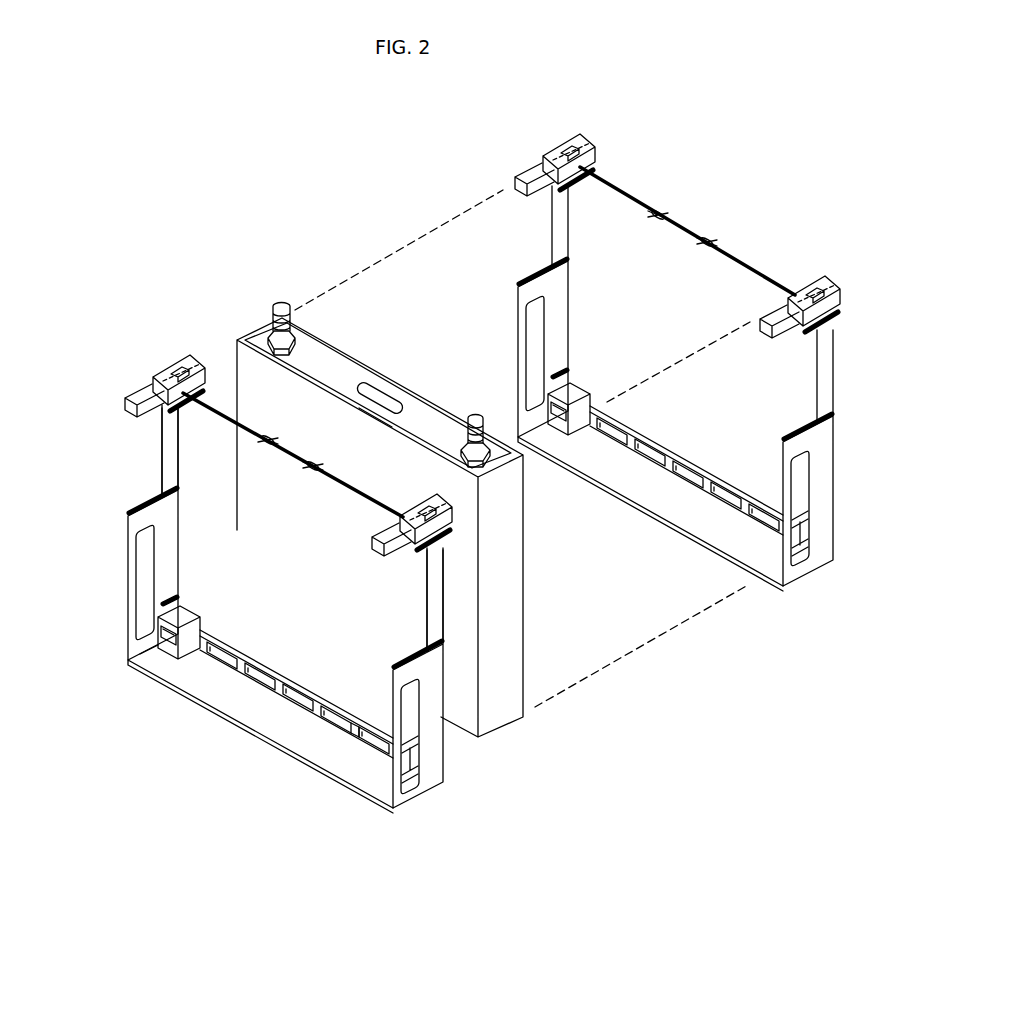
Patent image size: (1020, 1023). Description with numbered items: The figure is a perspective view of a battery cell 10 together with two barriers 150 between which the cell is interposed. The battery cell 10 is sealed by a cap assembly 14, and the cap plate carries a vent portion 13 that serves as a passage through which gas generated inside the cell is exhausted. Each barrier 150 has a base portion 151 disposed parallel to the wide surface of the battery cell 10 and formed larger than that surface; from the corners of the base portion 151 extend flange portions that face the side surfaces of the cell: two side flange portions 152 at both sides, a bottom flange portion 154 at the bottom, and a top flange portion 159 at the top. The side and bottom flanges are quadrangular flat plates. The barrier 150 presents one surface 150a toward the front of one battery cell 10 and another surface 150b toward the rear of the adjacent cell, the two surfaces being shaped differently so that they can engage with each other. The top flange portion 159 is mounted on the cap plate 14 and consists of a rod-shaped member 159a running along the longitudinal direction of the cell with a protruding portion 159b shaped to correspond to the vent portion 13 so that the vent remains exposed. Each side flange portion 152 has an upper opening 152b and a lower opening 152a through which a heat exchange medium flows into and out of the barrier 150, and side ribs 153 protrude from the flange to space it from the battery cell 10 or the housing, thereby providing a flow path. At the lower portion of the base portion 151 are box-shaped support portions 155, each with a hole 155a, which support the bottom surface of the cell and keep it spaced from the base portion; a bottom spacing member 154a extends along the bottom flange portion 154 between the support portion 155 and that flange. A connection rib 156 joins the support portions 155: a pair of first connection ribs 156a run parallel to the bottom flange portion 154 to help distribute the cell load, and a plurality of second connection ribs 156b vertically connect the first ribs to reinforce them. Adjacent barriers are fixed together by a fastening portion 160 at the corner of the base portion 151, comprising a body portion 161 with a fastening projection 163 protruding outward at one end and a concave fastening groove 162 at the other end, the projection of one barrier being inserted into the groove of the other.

The battery cell 10 is at (445, 520).
The vent portion 13 is at (380, 396).
The cap assembly 14 is at (425, 415).
The barrier 150 is at (268, 252).
The one surface 150a is at (203, 447).
The other surface 150b is at (242, 432).
The base portion 151 is at (280, 645).
The side flange portion 152 is at (283, 606).
The lower opening 152a is at (143, 622).
The upper opening 152b is at (148, 442).
The side rib 153 is at (173, 598).
The bottom flange portion 154 is at (296, 750).
The bottom spacing member 154a is at (170, 635).
The support portion 155 is at (130, 664).
The hole 155a is at (167, 640).
The connection rib 156 is at (298, 756).
The first connection rib 156a is at (360, 727).
The second connection rib 156b is at (338, 728).
The top flange portion 159 is at (396, 214).
The rod-shaped member 159a is at (337, 468).
The protruding portion 159b is at (323, 462).
The fastening portion 160 is at (442, 317).
The body portion 161 is at (152, 372).
The fastening groove 162 is at (190, 378).
The fastening projection 163 is at (130, 395).